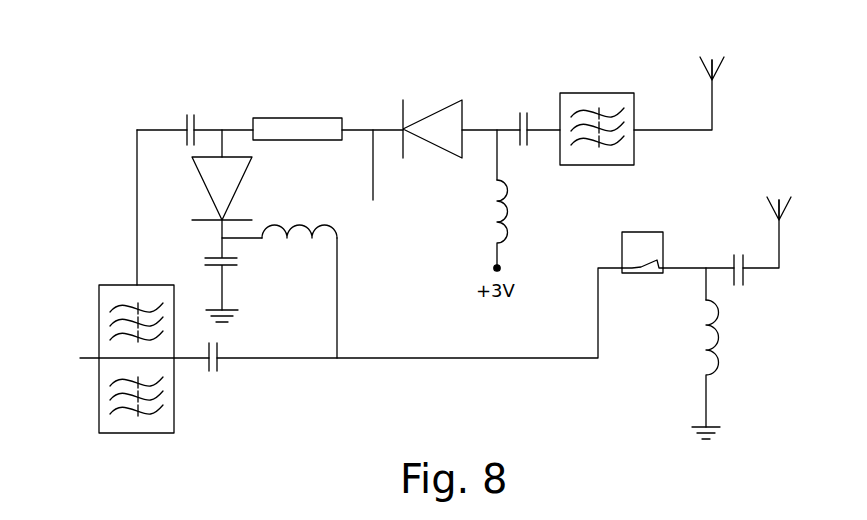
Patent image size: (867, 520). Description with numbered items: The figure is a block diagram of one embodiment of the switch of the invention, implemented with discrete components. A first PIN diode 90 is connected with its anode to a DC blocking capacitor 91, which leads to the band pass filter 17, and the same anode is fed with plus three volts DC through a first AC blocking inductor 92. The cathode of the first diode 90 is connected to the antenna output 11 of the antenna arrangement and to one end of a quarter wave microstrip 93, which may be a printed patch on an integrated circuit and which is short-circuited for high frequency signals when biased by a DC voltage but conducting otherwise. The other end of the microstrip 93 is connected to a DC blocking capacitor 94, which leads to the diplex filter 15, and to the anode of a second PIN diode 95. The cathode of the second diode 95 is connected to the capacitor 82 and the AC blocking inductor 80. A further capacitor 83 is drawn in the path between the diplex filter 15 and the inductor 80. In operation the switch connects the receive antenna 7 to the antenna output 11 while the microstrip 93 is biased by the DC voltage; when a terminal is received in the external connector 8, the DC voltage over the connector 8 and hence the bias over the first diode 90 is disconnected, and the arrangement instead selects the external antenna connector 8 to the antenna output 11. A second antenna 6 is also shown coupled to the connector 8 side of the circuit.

The antenna 6 is at (787, 205).
The receive antenna 7 is at (720, 62).
The external connector 8 is at (646, 230).
The antenna output 11 is at (373, 185).
The diplex filter 15 is at (90, 358).
The band pass filter 17 is at (602, 93).
The AC blocking inductor 80 is at (290, 228).
The capacitor 82 is at (233, 267).
The capacitor 83 is at (220, 356).
The first PIN diode 90 is at (445, 101).
The DC blocking capacitor 91 is at (520, 115).
The first AC blocking inductor 92 is at (499, 178).
The quarter wave microstrip 93 is at (280, 118).
The DC blocking capacitor 94 is at (186, 121).
The second PIN diode 95 is at (246, 172).